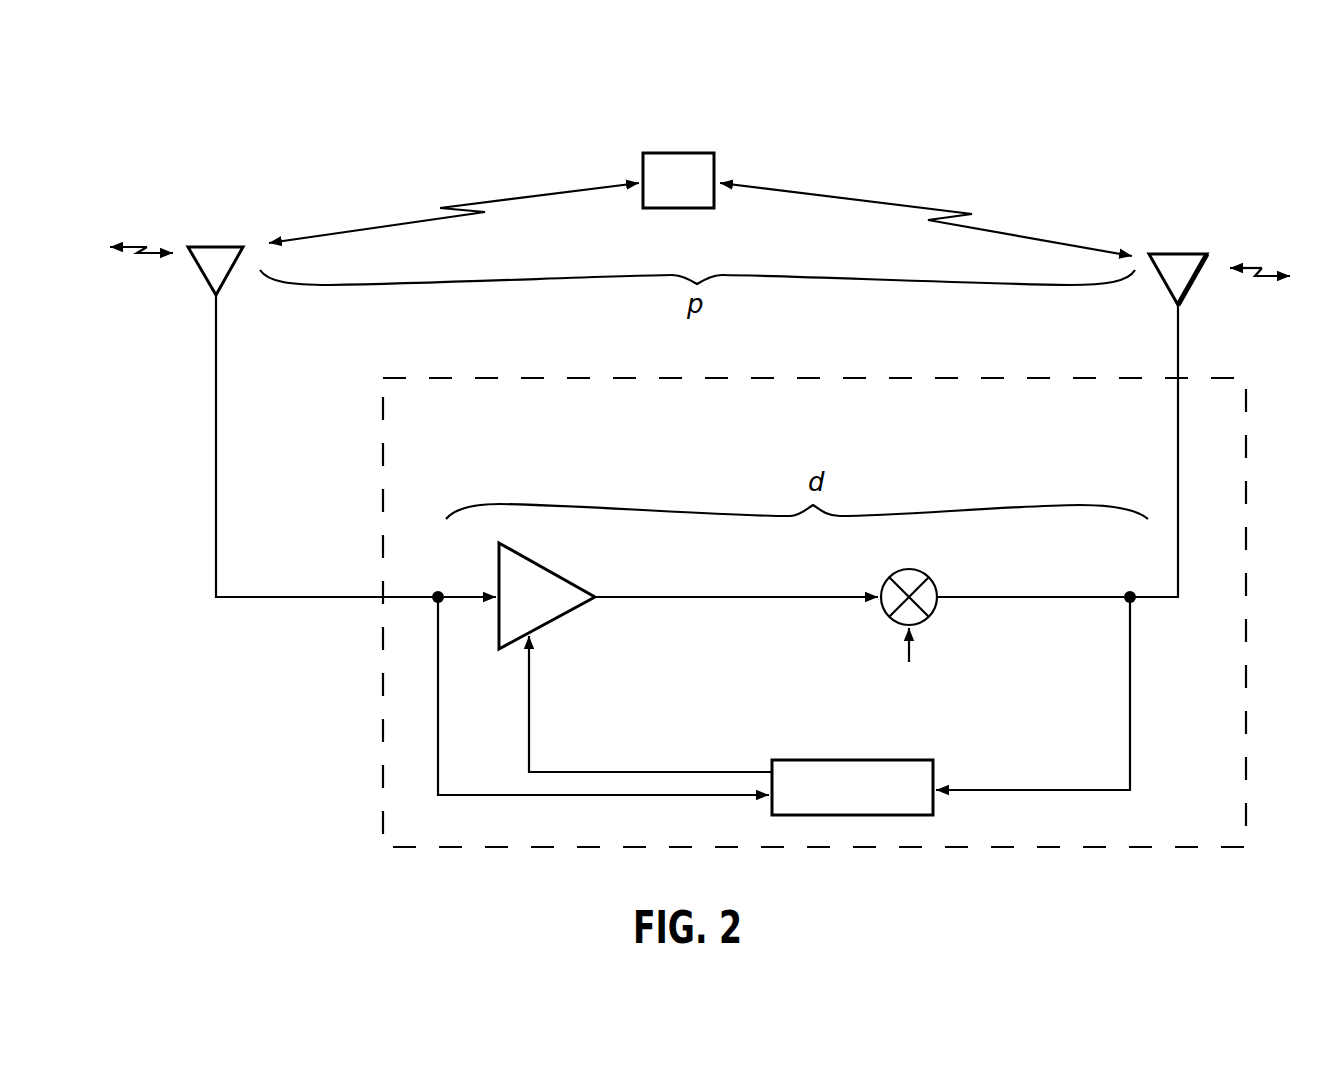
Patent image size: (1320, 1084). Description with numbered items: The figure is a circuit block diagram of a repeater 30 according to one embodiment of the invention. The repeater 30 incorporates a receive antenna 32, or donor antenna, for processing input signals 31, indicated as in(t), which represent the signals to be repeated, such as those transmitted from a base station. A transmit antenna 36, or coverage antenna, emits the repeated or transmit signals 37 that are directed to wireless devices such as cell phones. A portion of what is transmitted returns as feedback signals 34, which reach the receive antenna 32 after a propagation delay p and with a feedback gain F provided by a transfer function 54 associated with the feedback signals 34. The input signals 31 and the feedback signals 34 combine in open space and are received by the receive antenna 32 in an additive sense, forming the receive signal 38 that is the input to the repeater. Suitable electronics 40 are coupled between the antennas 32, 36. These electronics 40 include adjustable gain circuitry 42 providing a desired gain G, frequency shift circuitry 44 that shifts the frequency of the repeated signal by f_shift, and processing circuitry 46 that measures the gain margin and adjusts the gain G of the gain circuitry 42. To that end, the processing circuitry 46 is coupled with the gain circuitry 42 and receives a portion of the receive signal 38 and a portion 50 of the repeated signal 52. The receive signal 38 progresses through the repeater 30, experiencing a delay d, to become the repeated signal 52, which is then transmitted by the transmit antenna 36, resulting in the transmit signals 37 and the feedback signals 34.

The repeater 30 is at (1232, 129).
The input signals 31 is at (136, 247).
The receive antenna 32 is at (218, 247).
The feedback signals 34 is at (483, 202).
The transmit antenna 36 is at (1183, 254).
The transmit signals 37 is at (1257, 268).
The receive signal 38 is at (216, 440).
The electronics 40 is at (1248, 617).
The adjustable gain circuitry 42 is at (568, 581).
The frequency shift circuitry 44 is at (915, 569).
The processing circuitry 46 is at (832, 760).
The portion of the repeated signal 50 is at (1131, 722).
The repeated signal 52 is at (1180, 340).
The transfer function 54 is at (679, 153).